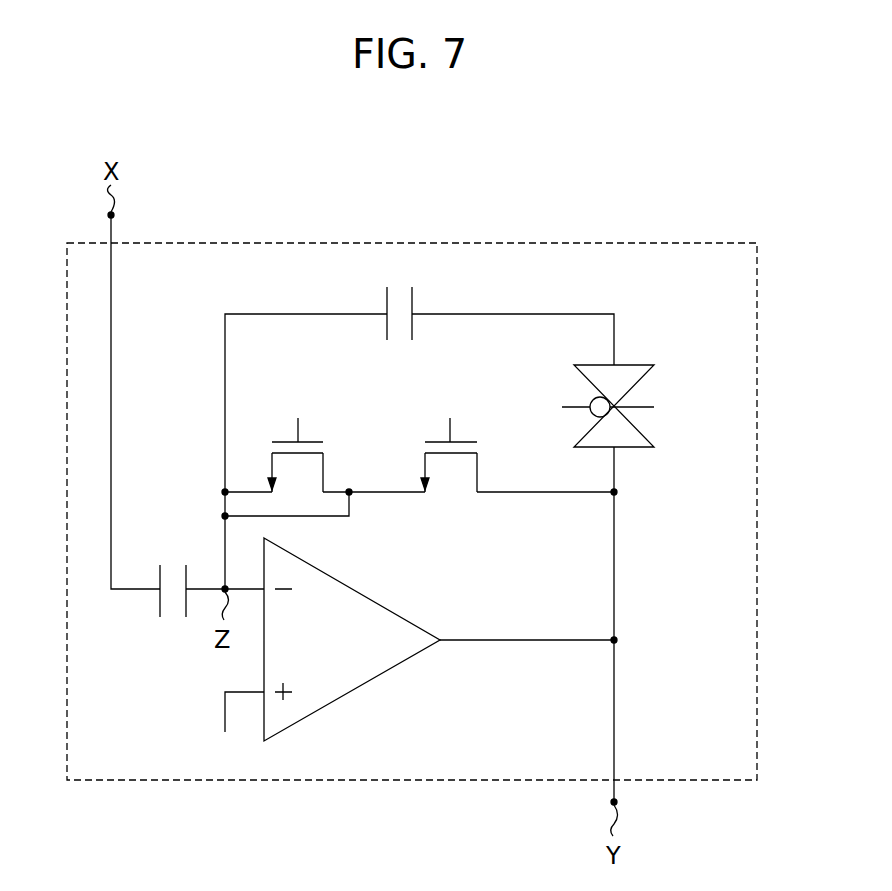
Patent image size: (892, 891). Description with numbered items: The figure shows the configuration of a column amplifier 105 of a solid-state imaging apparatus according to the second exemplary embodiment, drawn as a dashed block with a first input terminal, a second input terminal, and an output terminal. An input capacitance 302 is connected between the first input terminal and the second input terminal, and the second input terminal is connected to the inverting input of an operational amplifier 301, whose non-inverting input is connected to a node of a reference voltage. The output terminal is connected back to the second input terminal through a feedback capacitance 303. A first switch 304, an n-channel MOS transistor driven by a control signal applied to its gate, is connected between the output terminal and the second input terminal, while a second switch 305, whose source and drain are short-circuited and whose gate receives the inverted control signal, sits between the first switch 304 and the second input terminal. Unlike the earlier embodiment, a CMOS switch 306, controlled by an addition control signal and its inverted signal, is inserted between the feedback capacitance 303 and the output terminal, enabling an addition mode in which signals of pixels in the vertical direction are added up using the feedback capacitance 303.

The column amplifier 105 is at (500, 243).
The operational amplifier 301 is at (358, 590).
The input capacitance 302 is at (170, 565).
The feedback capacitance 303 is at (404, 297).
The first switch 304 is at (479, 442).
The second switch 305 is at (326, 442).
The CMOS switch 306 is at (640, 365).